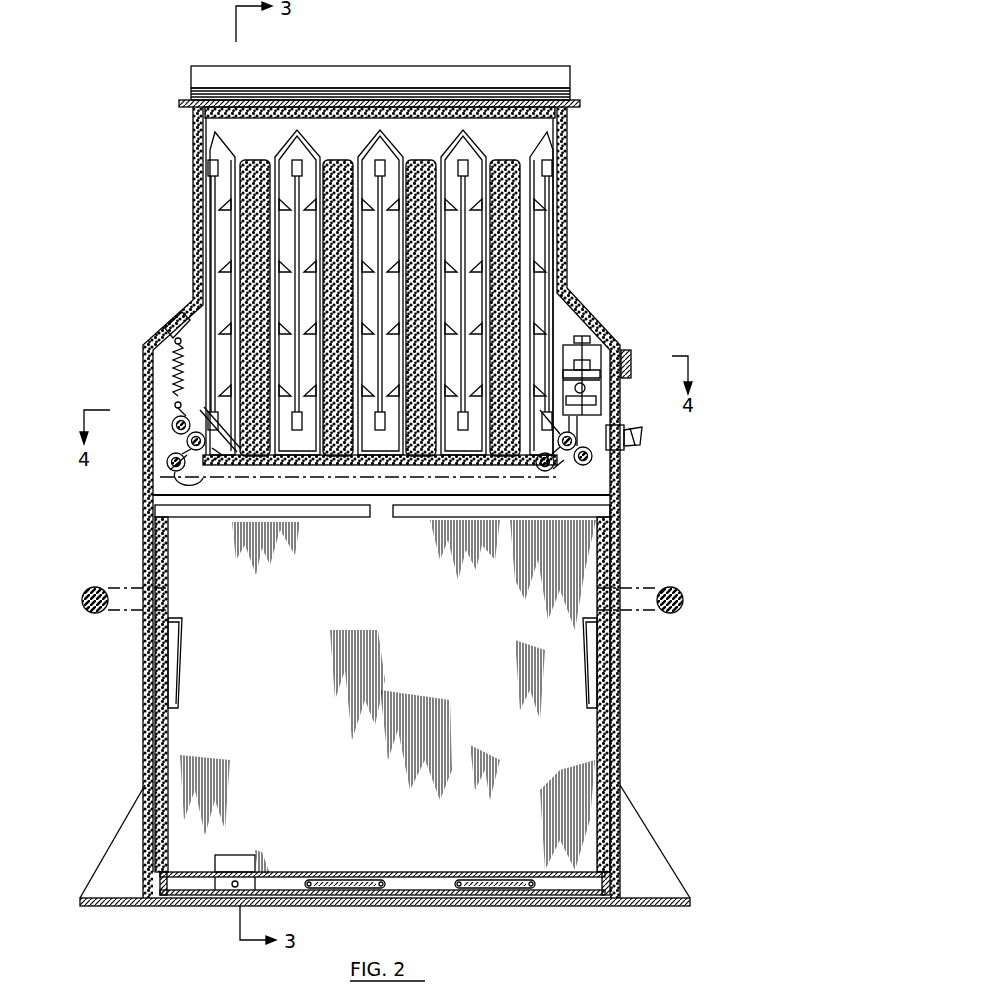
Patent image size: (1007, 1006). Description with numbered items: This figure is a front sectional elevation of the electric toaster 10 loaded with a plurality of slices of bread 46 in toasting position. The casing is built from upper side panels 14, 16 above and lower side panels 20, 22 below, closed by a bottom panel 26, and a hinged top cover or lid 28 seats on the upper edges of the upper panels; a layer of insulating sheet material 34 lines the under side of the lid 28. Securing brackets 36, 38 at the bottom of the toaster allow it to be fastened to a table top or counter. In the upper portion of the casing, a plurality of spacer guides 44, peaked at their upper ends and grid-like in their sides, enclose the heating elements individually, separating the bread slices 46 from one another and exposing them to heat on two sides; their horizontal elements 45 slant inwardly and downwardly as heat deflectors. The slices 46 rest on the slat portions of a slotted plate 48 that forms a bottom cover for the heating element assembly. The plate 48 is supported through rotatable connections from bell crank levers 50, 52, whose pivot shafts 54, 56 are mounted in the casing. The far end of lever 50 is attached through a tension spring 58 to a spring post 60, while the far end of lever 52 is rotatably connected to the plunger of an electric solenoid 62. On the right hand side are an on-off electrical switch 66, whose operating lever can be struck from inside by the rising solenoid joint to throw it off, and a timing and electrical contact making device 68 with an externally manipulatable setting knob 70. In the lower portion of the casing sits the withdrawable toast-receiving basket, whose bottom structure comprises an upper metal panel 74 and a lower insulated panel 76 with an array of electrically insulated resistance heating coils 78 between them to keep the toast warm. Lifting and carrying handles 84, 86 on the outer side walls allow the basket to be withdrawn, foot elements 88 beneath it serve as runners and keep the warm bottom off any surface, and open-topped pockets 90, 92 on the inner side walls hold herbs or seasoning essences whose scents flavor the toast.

The electric toaster 10 is at (642, 213).
The upper side panel 14 is at (568, 181).
The upper side panel 16 is at (194, 190).
The lower side panel 20 is at (622, 572).
The lower side panel 22 is at (148, 548).
The bottom panel 26 is at (516, 906).
The top cover or lid 28 is at (576, 101).
The insulation layer 34 is at (270, 120).
The securing bracket 36 is at (647, 822).
The securing bracket 38 is at (124, 822).
The spacer guide 44 is at (392, 132).
The horizontal element 45 is at (556, 270).
The slice of bread 46 is at (330, 160).
The slotted plate 48 is at (376, 468).
The bell crank lever 50 is at (180, 435).
The bell crank lever 52 is at (560, 471).
The pivot shaft 54 is at (170, 456).
The pivot shaft 56 is at (575, 466).
The tension spring 58 is at (175, 374).
The spring post 60 is at (168, 326).
The electric solenoid 62 is at (602, 380).
The electrical switch 66 is at (628, 436).
The timing and electrical contact making device 68 is at (574, 323).
The timing adjustment knob 70 is at (632, 360).
The upper metal panel 74 is at (418, 873).
The lower panel 76 is at (414, 895).
The resistance heating coil 78 is at (334, 878).
The lifting and carrying handle 84 is at (84, 596).
The lifting and carrying handle 86 is at (682, 596).
The foot element 88 is at (218, 898).
The pocket or receptacle 90 is at (183, 628).
The pocket or receptacle 92 is at (582, 628).